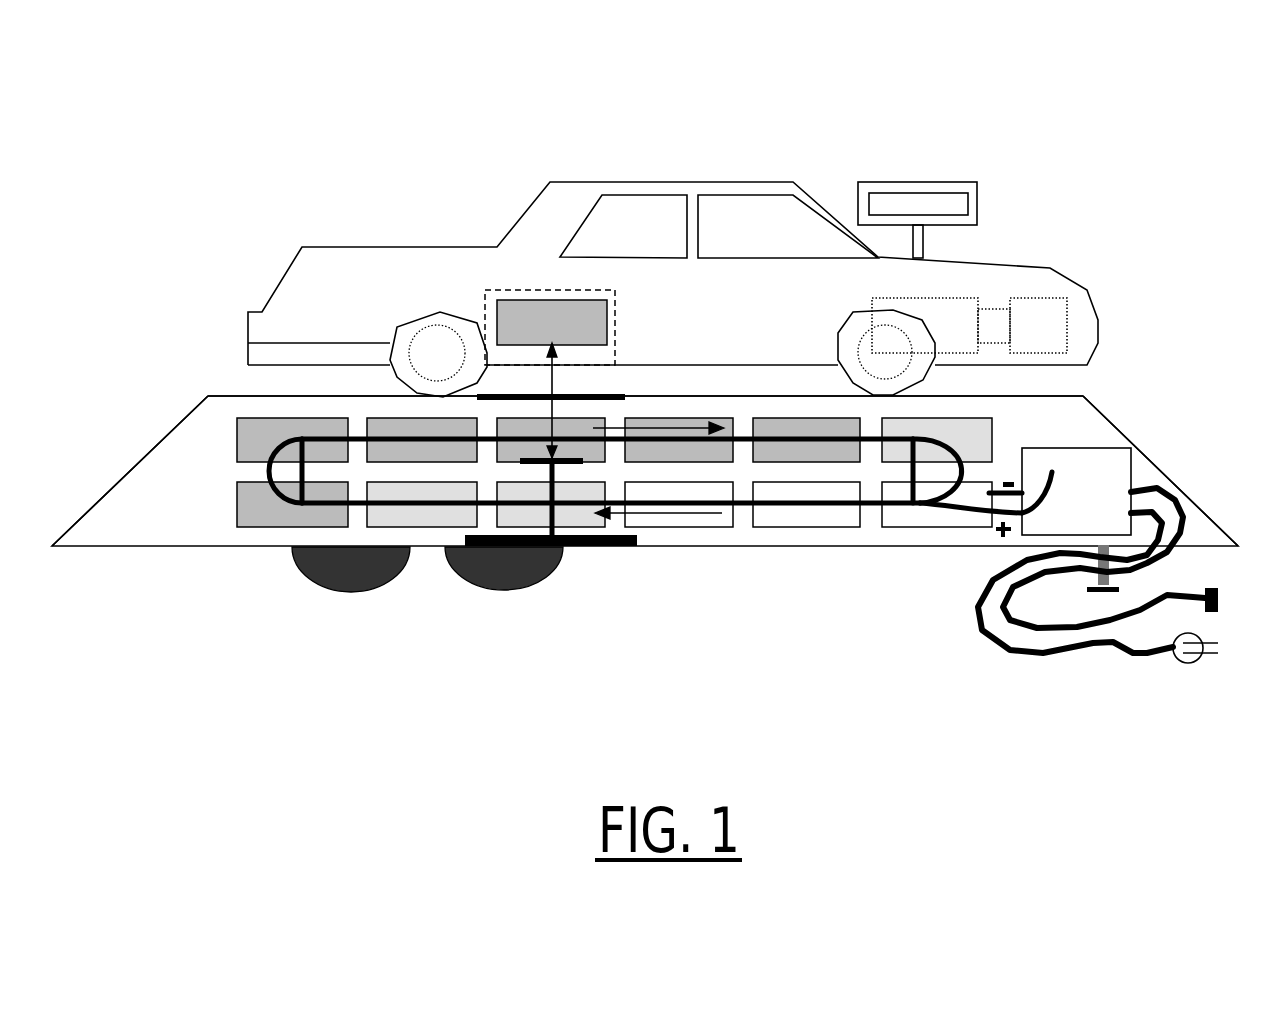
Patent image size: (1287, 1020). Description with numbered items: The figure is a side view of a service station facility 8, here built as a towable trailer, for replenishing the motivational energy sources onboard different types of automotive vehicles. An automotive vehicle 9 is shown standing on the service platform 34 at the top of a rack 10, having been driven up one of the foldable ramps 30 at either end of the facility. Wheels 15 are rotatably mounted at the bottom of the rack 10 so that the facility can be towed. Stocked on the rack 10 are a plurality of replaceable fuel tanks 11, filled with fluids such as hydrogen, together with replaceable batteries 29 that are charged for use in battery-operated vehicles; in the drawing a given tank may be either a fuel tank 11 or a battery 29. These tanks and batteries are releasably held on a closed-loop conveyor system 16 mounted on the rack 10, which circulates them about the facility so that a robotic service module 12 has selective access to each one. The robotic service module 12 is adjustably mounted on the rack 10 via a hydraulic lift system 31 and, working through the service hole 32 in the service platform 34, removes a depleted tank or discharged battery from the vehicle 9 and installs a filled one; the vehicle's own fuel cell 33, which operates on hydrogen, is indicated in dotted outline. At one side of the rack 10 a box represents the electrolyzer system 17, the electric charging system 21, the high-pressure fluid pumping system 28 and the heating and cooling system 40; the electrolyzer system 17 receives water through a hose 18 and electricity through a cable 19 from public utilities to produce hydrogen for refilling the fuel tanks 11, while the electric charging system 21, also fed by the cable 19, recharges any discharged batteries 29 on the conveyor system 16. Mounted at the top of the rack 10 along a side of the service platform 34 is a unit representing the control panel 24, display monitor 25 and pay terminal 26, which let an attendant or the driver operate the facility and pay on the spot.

The service station facility 8 is at (1108, 161).
The automotive vehicle 9 is at (387, 245).
The rack 10 is at (223, 477).
The fuel tank 11 is at (608, 323).
The robotic service module 12 is at (573, 468).
The wheel 15 is at (352, 595).
The conveyor system 16 is at (870, 508).
The electrolyzer system 17 is at (1136, 457).
The hose 18 is at (1182, 590).
The cable 19 is at (1060, 658).
The electric charging system 21 is at (1136, 457).
The control panel 24 is at (917, 181).
The display monitor 25 is at (917, 181).
The pay terminal 26 is at (902, 177).
The high-pressure fluid pumping system 28 is at (1136, 457).
The battery 29 is at (250, 532).
The foldable ramp 30 is at (110, 488).
The hydraulic lift system 31 is at (642, 537).
The service hole 32 is at (608, 390).
The fuel cell 33 is at (888, 298).
The service platform 34 is at (228, 393).
The heating and cooling system 40 is at (1080, 446).